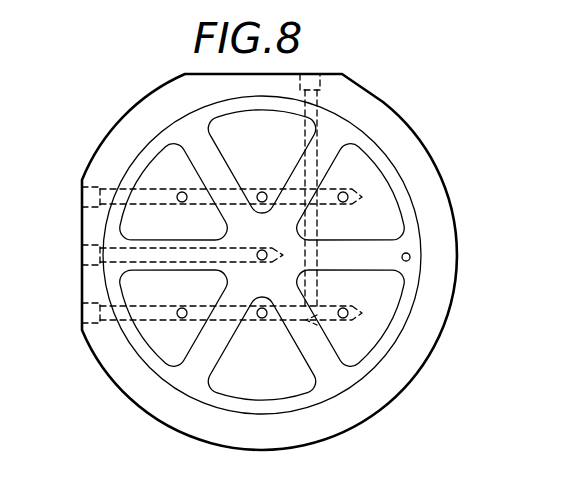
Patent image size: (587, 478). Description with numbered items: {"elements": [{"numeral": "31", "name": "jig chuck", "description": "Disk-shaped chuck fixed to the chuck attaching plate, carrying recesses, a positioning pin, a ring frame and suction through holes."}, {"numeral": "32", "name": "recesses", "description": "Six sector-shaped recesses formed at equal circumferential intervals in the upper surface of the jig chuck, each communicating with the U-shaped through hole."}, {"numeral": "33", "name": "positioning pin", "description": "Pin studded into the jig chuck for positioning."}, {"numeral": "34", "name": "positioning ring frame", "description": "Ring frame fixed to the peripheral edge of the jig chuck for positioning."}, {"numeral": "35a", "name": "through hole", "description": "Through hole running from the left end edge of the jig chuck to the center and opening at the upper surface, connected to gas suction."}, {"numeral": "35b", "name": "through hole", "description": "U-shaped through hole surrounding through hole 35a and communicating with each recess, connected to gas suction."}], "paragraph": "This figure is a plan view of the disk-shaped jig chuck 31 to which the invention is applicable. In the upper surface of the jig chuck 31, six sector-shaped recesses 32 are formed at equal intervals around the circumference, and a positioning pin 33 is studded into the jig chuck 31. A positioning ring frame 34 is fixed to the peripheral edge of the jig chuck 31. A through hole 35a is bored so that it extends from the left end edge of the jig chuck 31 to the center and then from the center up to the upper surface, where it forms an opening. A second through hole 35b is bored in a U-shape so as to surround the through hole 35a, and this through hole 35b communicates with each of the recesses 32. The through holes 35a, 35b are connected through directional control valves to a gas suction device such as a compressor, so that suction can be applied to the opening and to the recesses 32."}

The disc body 31 is at (375, 158).
The opening 32 is at (387, 217).
The small hole 33 is at (410, 257).
The outer rim 34 is at (437, 312).
The passage 35a is at (233, 262).
The passage 35b is at (248, 318).